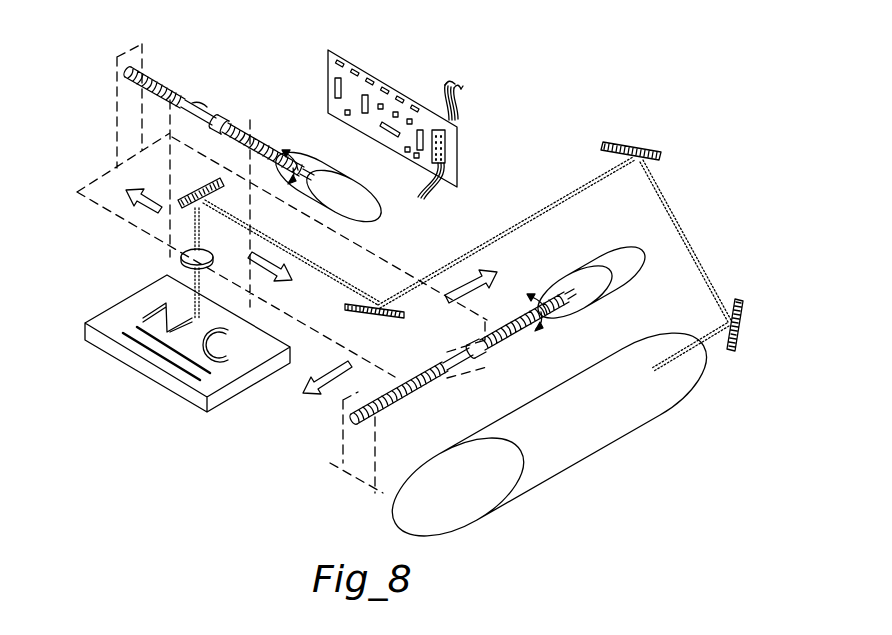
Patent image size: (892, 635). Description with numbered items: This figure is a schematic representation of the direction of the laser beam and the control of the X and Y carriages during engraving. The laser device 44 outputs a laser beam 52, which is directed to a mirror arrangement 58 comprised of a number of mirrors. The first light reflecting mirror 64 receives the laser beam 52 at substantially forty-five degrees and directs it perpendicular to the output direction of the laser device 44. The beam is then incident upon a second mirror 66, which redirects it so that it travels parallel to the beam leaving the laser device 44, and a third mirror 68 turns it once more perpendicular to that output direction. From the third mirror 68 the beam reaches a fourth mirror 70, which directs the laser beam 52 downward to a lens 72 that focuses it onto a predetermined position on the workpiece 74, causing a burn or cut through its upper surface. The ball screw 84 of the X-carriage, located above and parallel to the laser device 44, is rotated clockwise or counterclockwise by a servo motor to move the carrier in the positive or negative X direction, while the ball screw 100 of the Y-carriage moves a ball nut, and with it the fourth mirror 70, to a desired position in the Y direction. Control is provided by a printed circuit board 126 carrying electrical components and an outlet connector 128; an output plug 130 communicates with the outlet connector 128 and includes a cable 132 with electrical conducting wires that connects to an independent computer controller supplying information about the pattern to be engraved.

The ball screw 100 is at (220, 42).
The printed circuit board 126 is at (453, 173).
The outlet connector 128 is at (443, 148).
The output plug 130 is at (457, 117).
The cable 132 is at (500, 40).
The second mirror 66 is at (630, 152).
The mirror arrangement 58 is at (672, 178).
The first light reflecting mirror 64 is at (742, 307).
The laser beam 52 is at (677, 353).
The laser device 44 is at (593, 433).
The ball screw 84 is at (507, 337).
The third mirror 68 is at (378, 318).
The fourth mirror 70 is at (198, 186).
The lens 72 is at (187, 257).
The workpiece 74 is at (210, 380).